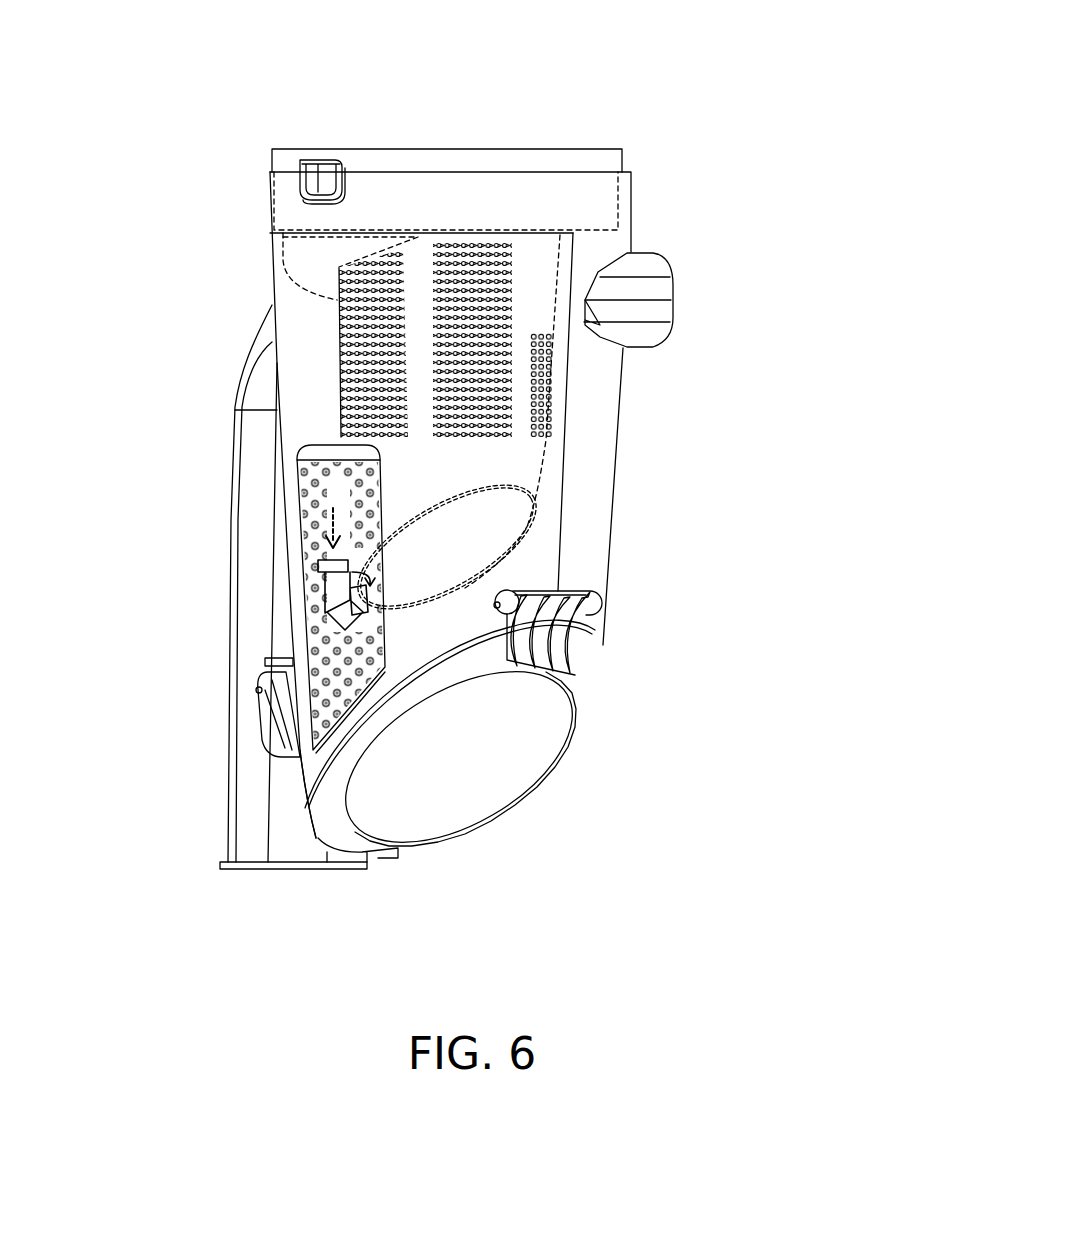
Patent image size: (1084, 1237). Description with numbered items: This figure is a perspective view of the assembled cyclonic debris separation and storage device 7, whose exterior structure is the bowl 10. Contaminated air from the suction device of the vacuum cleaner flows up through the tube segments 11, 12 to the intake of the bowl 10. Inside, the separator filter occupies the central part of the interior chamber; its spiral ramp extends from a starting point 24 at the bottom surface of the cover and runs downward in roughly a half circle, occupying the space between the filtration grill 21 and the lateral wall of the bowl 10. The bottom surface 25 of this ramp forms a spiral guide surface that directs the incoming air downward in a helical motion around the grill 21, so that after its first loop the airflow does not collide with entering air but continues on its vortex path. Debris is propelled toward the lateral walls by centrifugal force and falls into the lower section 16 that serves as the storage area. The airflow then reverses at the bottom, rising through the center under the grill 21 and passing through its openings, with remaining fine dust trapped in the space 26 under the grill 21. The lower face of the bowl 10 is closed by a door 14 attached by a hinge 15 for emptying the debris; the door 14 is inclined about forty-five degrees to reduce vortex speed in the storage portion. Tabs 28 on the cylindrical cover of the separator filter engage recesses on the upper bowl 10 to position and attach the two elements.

The cyclonic debris separation and storage device 7 is at (642, 448).
The bowl 10 is at (268, 345).
The tube segment 11 is at (243, 617).
The tube segment 12 is at (652, 263).
The door 14 is at (447, 747).
The hinge 15 is at (582, 622).
The lower section 16 is at (408, 640).
The filtration grill 21 is at (525, 460).
The starting point 24 is at (363, 243).
The bottom surface of the ramp 25 is at (310, 259).
The space under the grill 26 is at (493, 528).
The tabs 28 is at (318, 178).